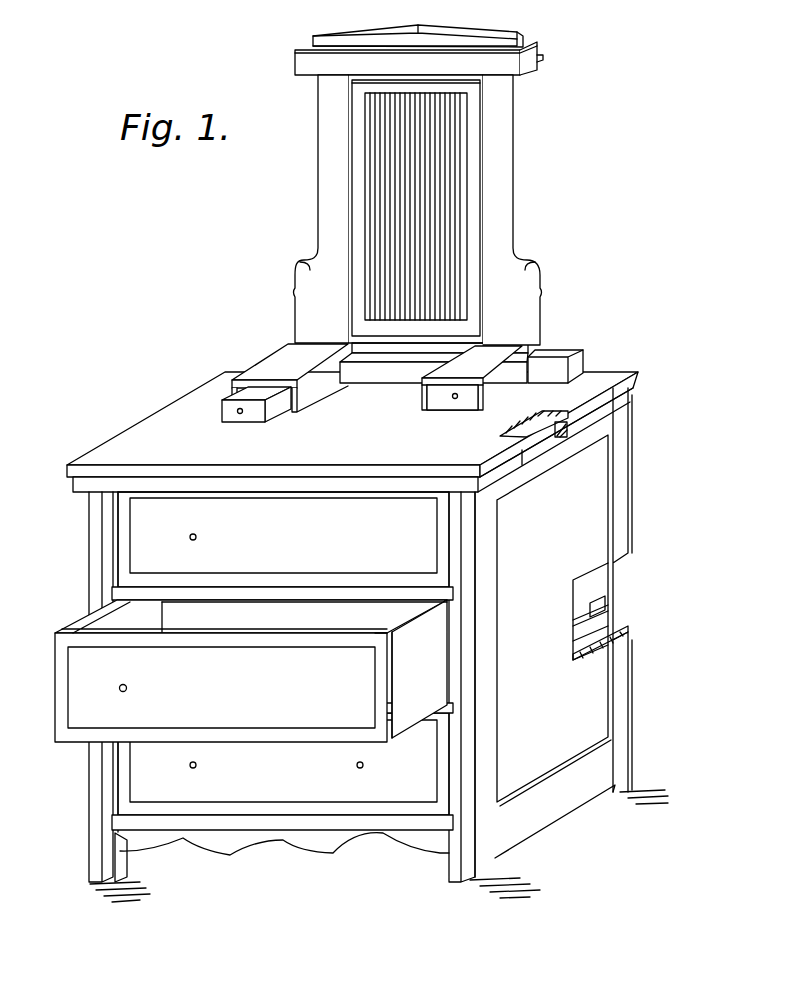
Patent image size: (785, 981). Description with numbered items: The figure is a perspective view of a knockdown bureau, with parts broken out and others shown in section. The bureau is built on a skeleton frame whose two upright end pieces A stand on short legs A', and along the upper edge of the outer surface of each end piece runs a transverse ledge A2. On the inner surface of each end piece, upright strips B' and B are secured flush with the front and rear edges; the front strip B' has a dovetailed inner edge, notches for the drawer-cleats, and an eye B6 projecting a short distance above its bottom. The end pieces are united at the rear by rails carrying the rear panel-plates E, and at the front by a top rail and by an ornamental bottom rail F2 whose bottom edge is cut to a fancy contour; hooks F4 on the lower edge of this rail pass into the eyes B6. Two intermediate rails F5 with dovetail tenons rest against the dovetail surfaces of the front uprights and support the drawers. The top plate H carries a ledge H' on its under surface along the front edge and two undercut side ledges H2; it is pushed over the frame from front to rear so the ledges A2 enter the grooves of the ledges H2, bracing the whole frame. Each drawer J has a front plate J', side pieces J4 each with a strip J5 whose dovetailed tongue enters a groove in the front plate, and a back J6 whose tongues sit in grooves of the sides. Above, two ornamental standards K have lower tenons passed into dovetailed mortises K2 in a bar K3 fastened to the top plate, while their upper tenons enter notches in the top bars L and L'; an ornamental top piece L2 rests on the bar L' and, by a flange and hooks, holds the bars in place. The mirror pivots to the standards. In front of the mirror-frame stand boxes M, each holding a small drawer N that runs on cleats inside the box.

The end piece A is at (343, 632).
The short leg A' is at (569, 841).
The transverse ledge A2 is at (641, 376).
The rear upright strip B is at (606, 631).
The front upright strip B' is at (252, 697).
The eye B6 is at (128, 853).
The rear panel-plate E is at (590, 611).
The ornamental bottom rail F2 is at (595, 634).
The hook F4 is at (125, 852).
The intermediate rail F5 is at (306, 594).
The hook bar G' is at (572, 623).
The top plate H is at (352, 424).
The ledge H' is at (275, 486).
The undercut L-shaped side ledge H2 is at (603, 421).
The drawer J is at (234, 671).
The front plate J' is at (283, 653).
The side piece J4 is at (272, 670).
The strip J5 is at (380, 631).
The back J6 is at (304, 613).
The ornamental standard K is at (336, 231).
The dovetailed mortise K2 is at (434, 369).
The bar K3 is at (583, 362).
The top bar L is at (407, 63).
The top bar L' is at (540, 58).
The ornamental top piece L2 is at (520, 28).
The box M is at (377, 378).
The drawer N is at (257, 414).